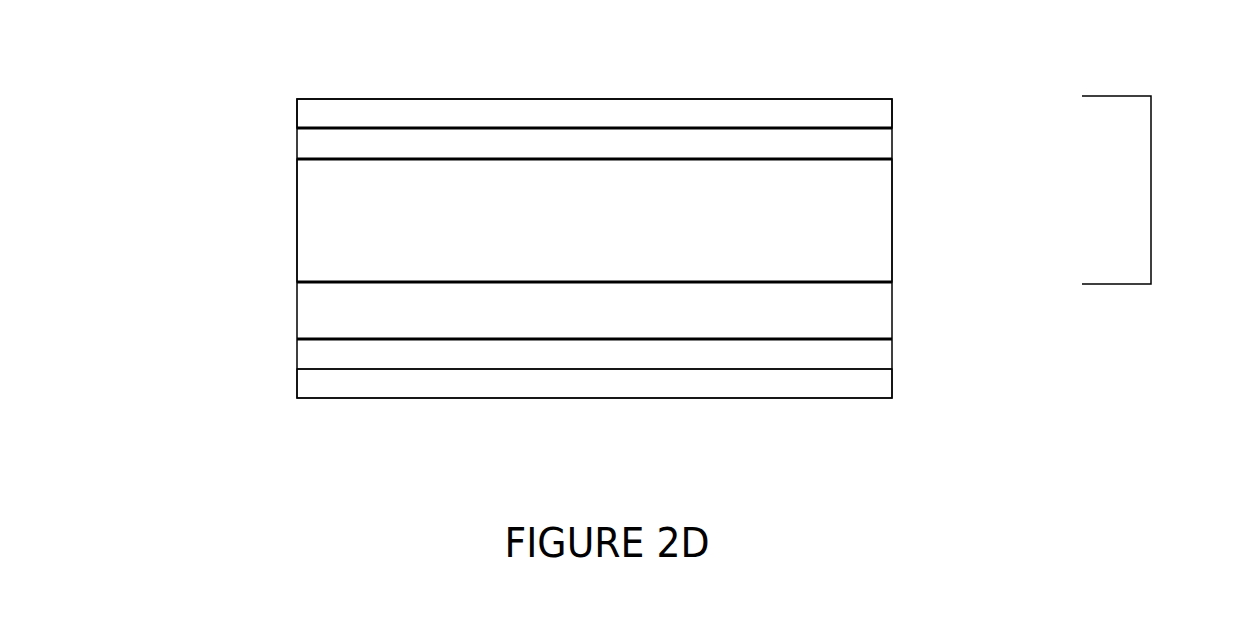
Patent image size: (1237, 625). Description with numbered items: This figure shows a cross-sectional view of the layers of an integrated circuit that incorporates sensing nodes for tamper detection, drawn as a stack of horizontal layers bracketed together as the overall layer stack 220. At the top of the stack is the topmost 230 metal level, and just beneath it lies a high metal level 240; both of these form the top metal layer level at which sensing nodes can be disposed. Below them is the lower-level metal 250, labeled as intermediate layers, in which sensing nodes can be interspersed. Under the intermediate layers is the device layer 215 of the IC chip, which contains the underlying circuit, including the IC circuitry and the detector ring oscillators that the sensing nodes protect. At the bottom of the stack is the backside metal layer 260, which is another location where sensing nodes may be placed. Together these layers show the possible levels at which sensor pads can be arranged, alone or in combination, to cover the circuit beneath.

The device layer 215 is at (347, 326).
The layer stack / die 220 is at (1151, 206).
The topmost metal level 230 is at (894, 112).
The high metal level 240 is at (296, 142).
The lower-level metal 250 is at (894, 211).
The backside metal layer 260 is at (296, 384).